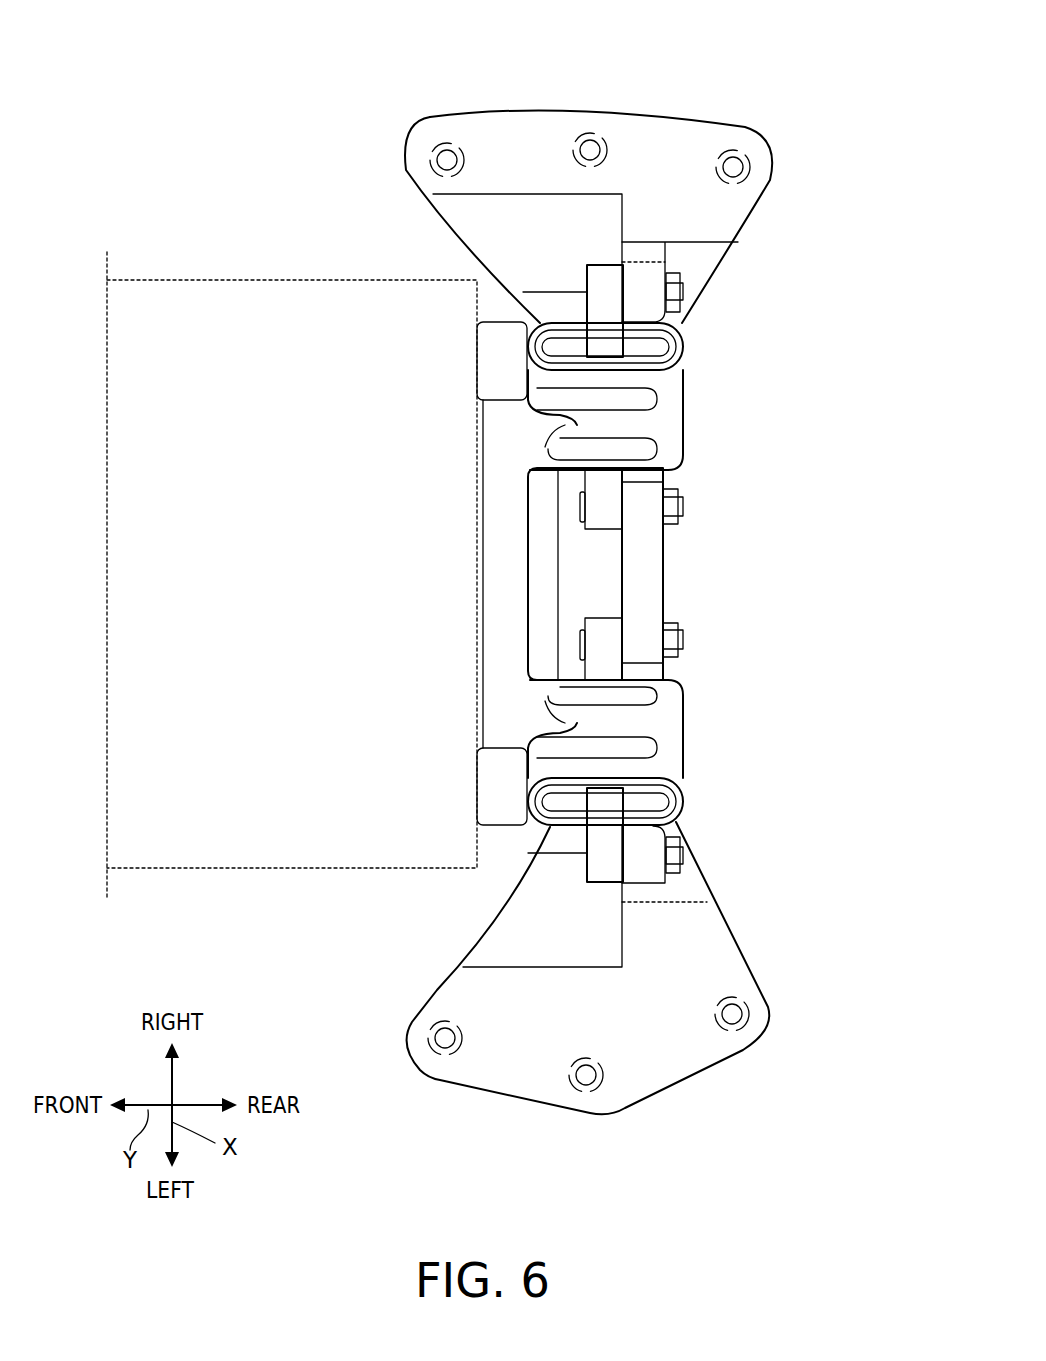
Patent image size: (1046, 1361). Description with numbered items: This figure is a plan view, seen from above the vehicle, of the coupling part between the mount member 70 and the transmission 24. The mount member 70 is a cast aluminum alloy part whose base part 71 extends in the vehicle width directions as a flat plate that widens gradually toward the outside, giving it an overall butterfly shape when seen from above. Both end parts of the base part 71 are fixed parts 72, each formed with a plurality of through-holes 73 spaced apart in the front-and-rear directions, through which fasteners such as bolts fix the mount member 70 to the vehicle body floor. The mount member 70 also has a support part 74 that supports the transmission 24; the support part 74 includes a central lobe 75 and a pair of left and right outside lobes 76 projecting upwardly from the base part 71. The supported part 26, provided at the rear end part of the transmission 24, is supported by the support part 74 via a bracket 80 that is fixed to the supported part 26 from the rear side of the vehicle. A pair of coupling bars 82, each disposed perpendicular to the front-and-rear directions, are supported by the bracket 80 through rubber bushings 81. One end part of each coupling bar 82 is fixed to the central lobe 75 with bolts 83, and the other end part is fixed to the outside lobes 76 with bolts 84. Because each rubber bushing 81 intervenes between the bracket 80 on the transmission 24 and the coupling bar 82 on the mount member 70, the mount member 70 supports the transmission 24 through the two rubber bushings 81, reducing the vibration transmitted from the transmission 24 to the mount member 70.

The transmission 24 is at (148, 272).
The supported part 26 is at (223, 280).
The mount member 70 is at (646, 600).
The base part 71 is at (607, 578).
The fixed parts 72 is at (665, 128).
The through-holes 73 is at (588, 142).
The support part 74 is at (657, 565).
The central lobe 75 is at (667, 593).
The outside lobes 76 is at (642, 272).
The bracket 80 is at (609, 575).
The rubber bushing 81 is at (655, 353).
The coupling bars 82 is at (583, 312).
The bolts 83 is at (684, 503).
The bolts 84 is at (683, 286).